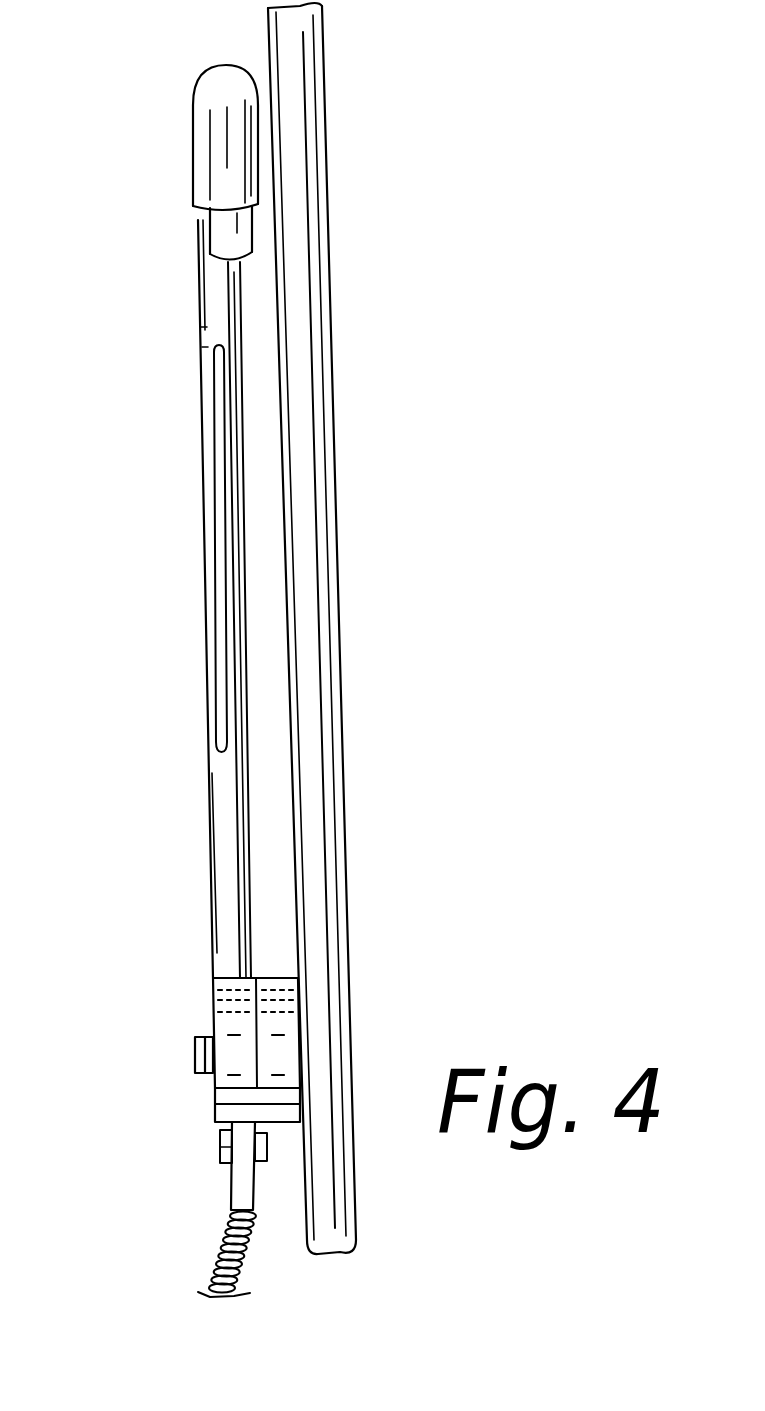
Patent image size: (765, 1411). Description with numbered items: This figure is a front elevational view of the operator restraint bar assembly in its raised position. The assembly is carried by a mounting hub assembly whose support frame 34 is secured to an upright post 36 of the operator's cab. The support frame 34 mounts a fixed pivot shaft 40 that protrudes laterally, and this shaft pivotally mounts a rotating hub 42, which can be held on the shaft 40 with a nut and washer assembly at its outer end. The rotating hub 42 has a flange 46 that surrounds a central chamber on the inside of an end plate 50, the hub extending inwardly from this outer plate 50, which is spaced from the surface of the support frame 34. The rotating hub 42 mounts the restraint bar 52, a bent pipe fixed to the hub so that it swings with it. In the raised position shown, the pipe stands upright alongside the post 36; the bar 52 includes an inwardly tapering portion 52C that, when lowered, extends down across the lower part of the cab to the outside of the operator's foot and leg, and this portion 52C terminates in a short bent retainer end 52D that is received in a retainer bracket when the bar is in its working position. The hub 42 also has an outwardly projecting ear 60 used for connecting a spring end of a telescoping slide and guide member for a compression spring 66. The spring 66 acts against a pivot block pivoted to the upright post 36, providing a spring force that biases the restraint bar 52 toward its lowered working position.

The support frame 34 is at (275, 1050).
The upright post 36 is at (306, 588).
The fixed pivot shaft 40 is at (195, 1053).
The rotating hub 42 is at (213, 1007).
The flange 46 is at (245, 1087).
The end plate 50 is at (180, 311).
The restraint bar 52 is at (213, 813).
The inwardly tapering portion 52C is at (222, 90).
The bent retainer end 52D is at (222, 234).
The outwardly projecting ear 60 is at (257, 1188).
The compression spring 66 is at (212, 1267).